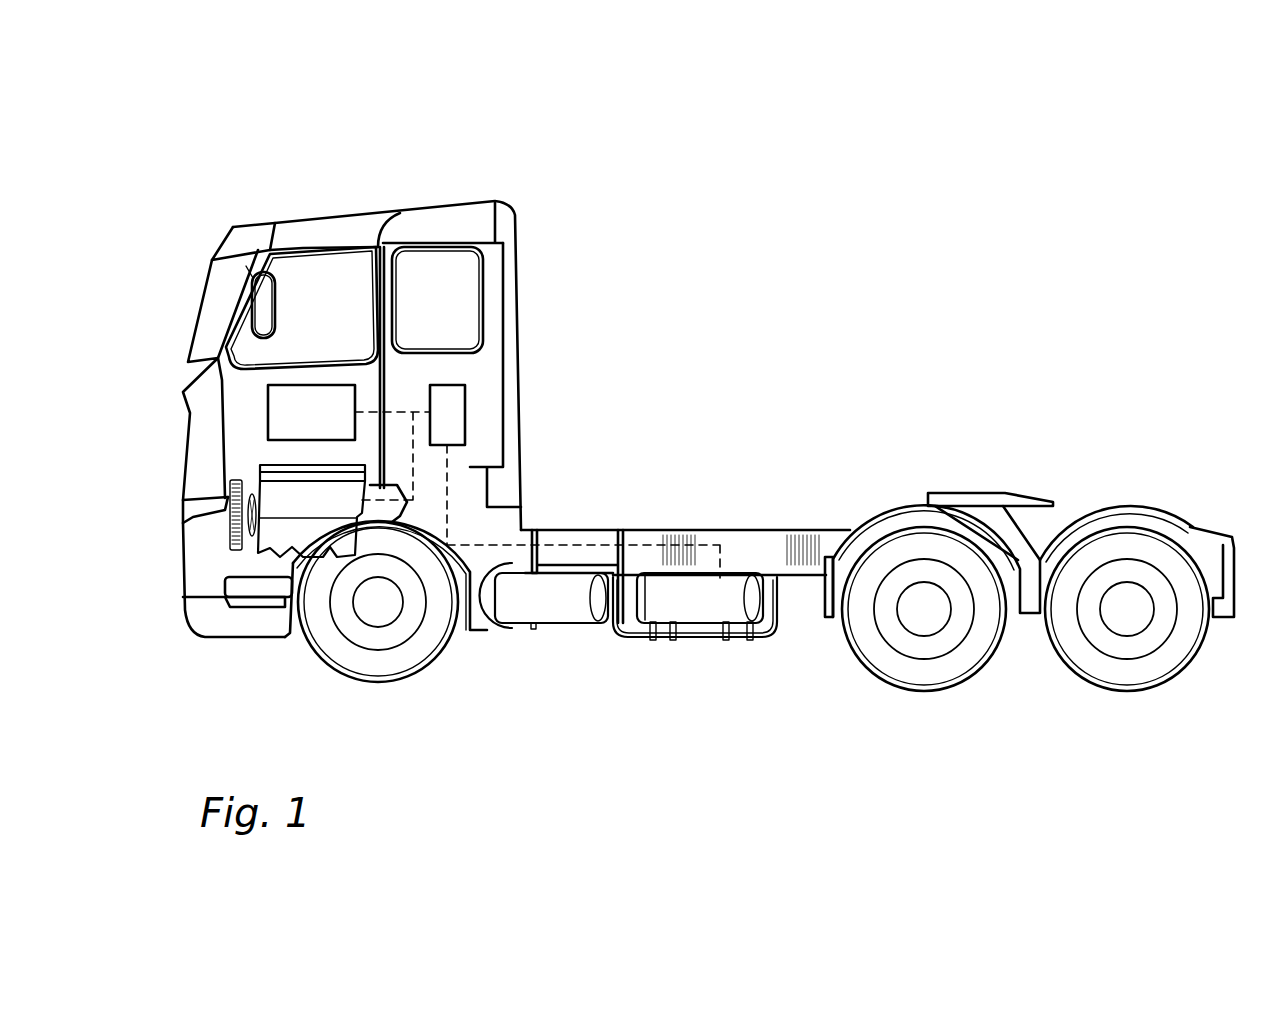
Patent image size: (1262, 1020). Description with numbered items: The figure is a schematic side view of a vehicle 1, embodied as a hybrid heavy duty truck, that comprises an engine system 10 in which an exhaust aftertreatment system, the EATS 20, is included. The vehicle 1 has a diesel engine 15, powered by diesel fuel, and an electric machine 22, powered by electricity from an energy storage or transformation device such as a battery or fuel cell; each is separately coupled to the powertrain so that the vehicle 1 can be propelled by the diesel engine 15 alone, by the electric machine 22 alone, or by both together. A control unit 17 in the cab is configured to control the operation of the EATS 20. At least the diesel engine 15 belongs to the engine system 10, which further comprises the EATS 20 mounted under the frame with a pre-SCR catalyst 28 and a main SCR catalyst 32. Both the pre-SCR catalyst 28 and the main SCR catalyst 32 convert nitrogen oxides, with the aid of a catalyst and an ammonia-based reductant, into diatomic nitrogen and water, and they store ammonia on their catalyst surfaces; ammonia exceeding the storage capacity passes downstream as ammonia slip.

The vehicle 1 is at (228, 118).
The engine system 10 is at (543, 483).
The diesel engine 15 is at (262, 560).
The control unit 17 is at (467, 413).
The EATS 20 is at (446, 733).
The electric machine 22 is at (311, 413).
The pre-SCR catalyst 28 is at (518, 600).
The main SCR catalyst 32 is at (702, 598).